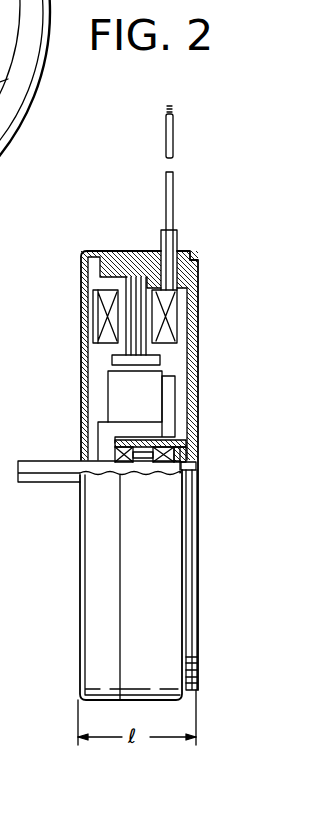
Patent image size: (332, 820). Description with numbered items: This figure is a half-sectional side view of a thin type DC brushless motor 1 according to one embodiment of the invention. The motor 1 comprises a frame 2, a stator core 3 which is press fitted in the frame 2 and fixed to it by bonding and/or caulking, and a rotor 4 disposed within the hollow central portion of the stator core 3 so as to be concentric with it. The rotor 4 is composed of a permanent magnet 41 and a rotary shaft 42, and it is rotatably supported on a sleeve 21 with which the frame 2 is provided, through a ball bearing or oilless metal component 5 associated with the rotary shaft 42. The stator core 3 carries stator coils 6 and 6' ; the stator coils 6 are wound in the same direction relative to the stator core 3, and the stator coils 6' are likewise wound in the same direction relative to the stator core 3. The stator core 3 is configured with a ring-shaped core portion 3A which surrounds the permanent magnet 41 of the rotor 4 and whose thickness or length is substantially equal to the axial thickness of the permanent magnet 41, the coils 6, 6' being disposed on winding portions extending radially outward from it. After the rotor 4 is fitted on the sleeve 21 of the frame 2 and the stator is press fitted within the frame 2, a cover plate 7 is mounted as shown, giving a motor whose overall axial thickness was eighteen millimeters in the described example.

The motor 1 is at (211, 169).
The frame 2 is at (200, 274).
The stator core 3 is at (138, 332).
The ring-shaped core portion 3A is at (112, 361).
The rotor 4 is at (162, 407).
The ball bearing or oilless metal component 5 is at (197, 466).
The stator coil 6 is at (65, 307).
The stator coil 6' is at (164, 316).
The cover plate 7 is at (85, 251).
The sleeve 21 is at (153, 466).
The permanent magnet 41 is at (118, 395).
The rotary shaft 42 is at (38, 481).